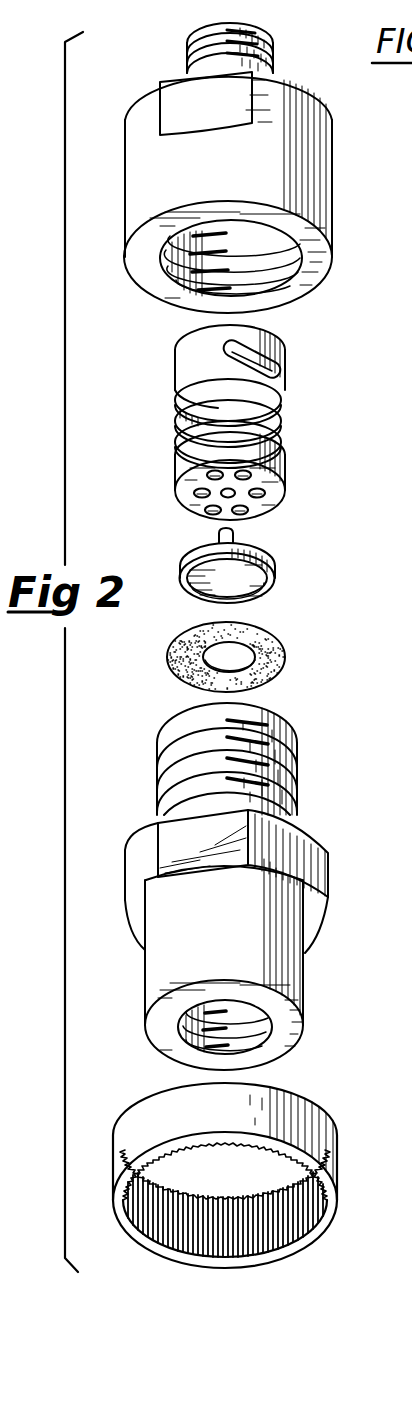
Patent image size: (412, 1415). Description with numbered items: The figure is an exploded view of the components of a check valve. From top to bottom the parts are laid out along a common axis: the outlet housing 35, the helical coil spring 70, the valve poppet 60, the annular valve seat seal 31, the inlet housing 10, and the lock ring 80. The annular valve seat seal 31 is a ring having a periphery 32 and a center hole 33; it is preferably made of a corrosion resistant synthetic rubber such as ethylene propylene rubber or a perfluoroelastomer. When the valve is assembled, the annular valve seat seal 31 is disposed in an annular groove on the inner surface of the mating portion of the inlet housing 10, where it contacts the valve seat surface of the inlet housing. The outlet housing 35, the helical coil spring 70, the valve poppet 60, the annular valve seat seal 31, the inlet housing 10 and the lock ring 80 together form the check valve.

The inlet housing 10 is at (337, 773).
The annular valve seat seal 31 is at (265, 643).
The periphery 32 is at (263, 628).
The center hole 33 is at (256, 652).
The outlet housing 35 is at (332, 164).
The valve poppet 60 is at (282, 563).
The helical coil spring 70 is at (288, 392).
The lock ring 80 is at (327, 1098).